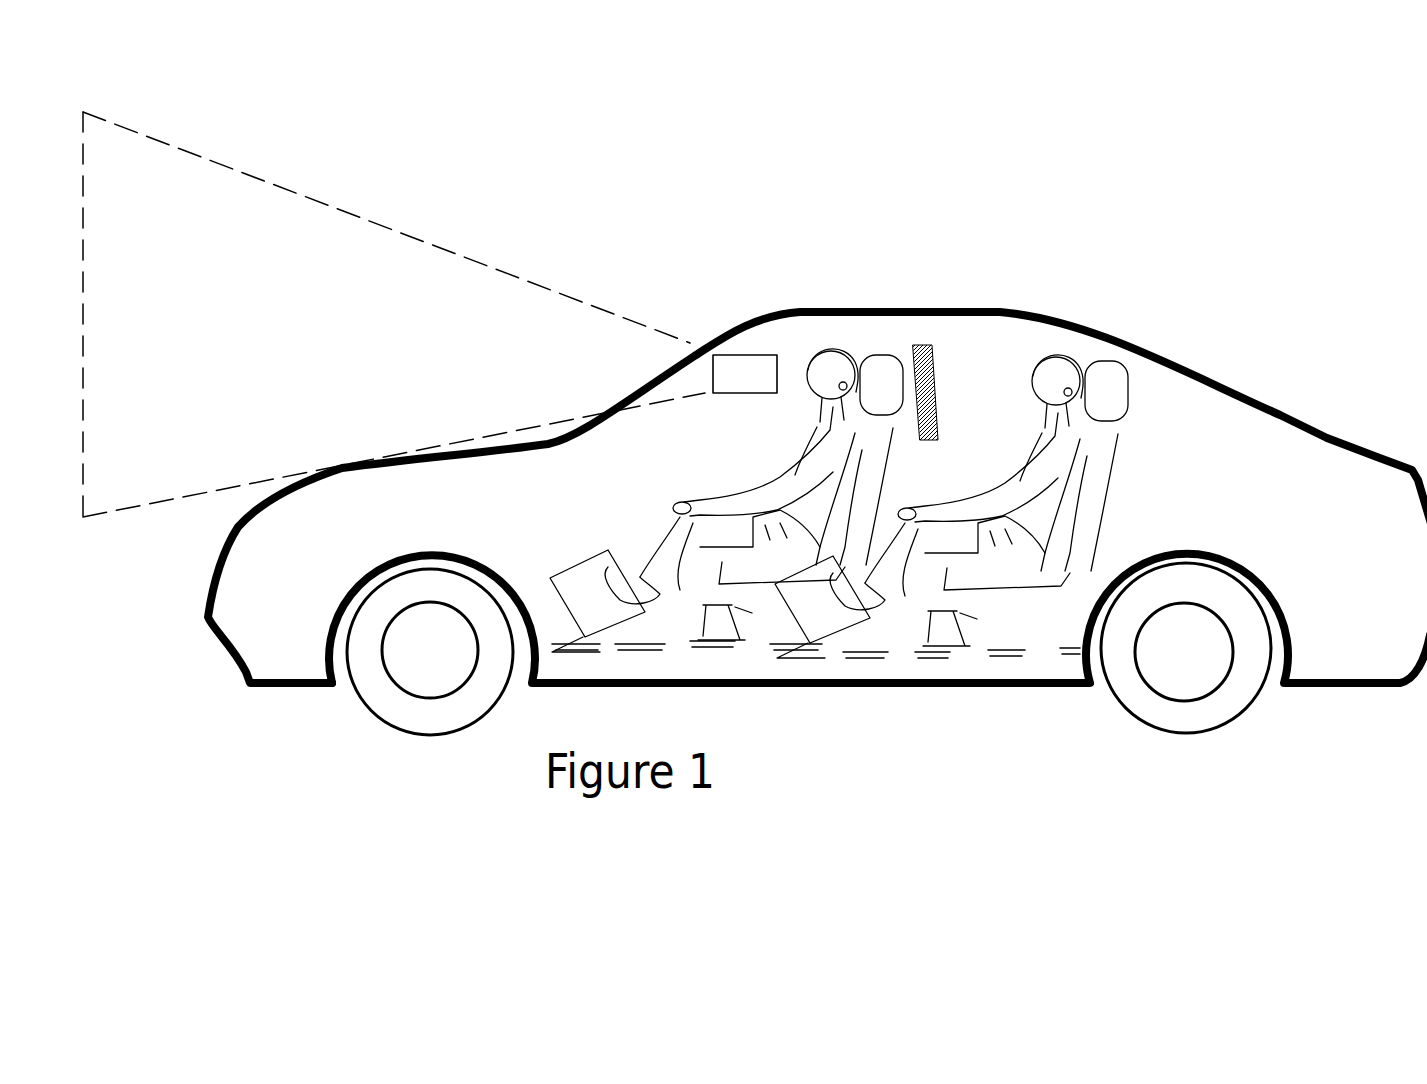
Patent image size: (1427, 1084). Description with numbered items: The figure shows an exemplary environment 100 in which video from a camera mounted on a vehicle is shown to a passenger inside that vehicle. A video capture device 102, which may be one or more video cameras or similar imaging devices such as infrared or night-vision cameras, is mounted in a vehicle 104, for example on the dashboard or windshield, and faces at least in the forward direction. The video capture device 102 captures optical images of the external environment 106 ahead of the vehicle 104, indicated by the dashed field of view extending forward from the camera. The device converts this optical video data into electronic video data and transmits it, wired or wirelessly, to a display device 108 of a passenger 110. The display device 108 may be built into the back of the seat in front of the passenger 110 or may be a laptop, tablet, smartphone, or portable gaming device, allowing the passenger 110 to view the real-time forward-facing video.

The environment 100 is at (737, 165).
The video capture device 102 is at (733, 354).
The vehicle 104 is at (1203, 358).
The external environment 106 is at (437, 247).
The display device 108 is at (931, 347).
The passenger 110 is at (1072, 355).